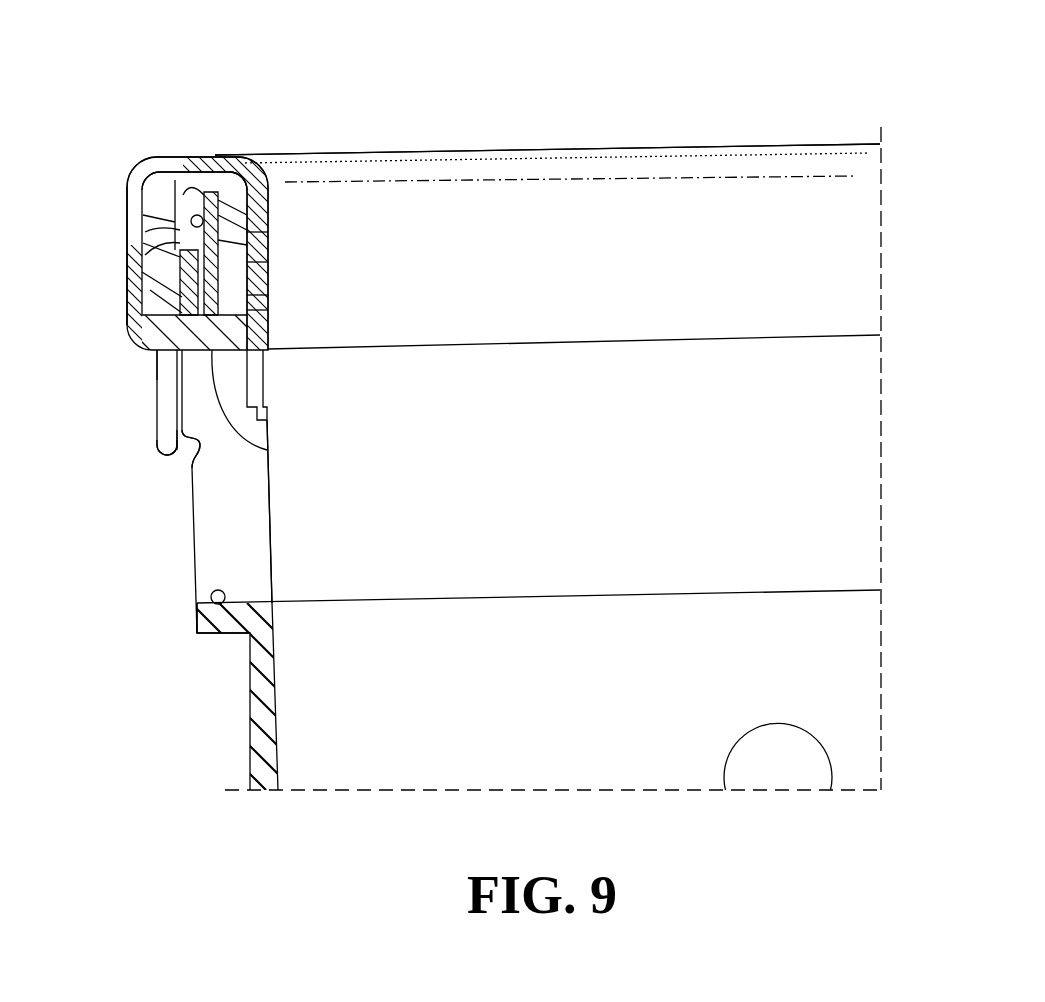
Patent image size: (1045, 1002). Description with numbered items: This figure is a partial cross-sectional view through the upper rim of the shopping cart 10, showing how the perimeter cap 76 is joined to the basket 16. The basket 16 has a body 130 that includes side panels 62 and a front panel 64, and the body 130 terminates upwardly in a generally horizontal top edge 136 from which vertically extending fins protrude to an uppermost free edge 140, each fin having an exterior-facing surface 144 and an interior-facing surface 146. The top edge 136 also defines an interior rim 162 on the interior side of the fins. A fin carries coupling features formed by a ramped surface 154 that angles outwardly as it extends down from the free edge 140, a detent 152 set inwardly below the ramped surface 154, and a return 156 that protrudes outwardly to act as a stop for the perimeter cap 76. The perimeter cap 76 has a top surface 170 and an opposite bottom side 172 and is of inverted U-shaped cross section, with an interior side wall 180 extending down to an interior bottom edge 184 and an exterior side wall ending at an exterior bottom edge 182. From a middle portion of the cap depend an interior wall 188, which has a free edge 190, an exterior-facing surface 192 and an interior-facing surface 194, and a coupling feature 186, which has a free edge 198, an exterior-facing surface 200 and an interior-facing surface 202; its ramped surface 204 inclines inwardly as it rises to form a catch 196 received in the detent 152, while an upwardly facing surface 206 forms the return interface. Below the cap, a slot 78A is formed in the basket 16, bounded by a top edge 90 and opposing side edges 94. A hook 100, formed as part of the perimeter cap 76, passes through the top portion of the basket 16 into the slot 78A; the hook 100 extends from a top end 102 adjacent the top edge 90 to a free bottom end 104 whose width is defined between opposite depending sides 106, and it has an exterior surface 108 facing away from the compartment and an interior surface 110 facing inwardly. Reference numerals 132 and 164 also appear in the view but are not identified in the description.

The shopping cart 10 is at (124, 74).
The basket 16 is at (161, 99).
The side panels 62 is at (262, 754).
The front panel 64 is at (845, 737).
The perimeter cap 76 is at (489, 204).
The slot 78A is at (216, 575).
The top edge 90 is at (193, 492).
The opposing side edges 94 is at (213, 552).
The hook 100 is at (166, 398).
The top end 102 is at (156, 353).
The bottom end 104 is at (178, 452).
The opposite depending sides 106 is at (162, 422).
The exterior surface 108 is at (175, 410).
The interior surface 110 is at (185, 433).
The body 130 is at (845, 520).
The upper housing portion 132 is at (845, 247).
The top edge 136 is at (222, 294).
The free edge 140 is at (221, 162).
The exterior-facing surface 144 is at (142, 334).
The interior-facing surface 146 is at (260, 162).
The detent 152 is at (135, 280).
The ramped surface 154 is at (196, 160).
The return 156 is at (266, 232).
The interior rim 162 is at (130, 300).
The bead 164 is at (165, 243).
The top surface 170 is at (176, 160).
The bottom side 172 is at (148, 172).
The interior side wall 180 is at (266, 310).
The exterior bottom edge 182 is at (128, 205).
The interior bottom edge 184 is at (263, 355).
The coupling feature 186 is at (132, 214).
The interior wall 188 is at (288, 160).
The free edge 190 is at (266, 436).
The exterior-facing surface 192 is at (167, 162).
The interior-facing surface 194 is at (222, 263).
The catch 196 is at (140, 230).
The free edge 198 is at (135, 262).
The exterior-facing surface 200 is at (138, 222).
The interior-facing surface 202 is at (206, 160).
The ramped surface 204 is at (266, 240).
The upwardly facing surface 206 is at (262, 226).